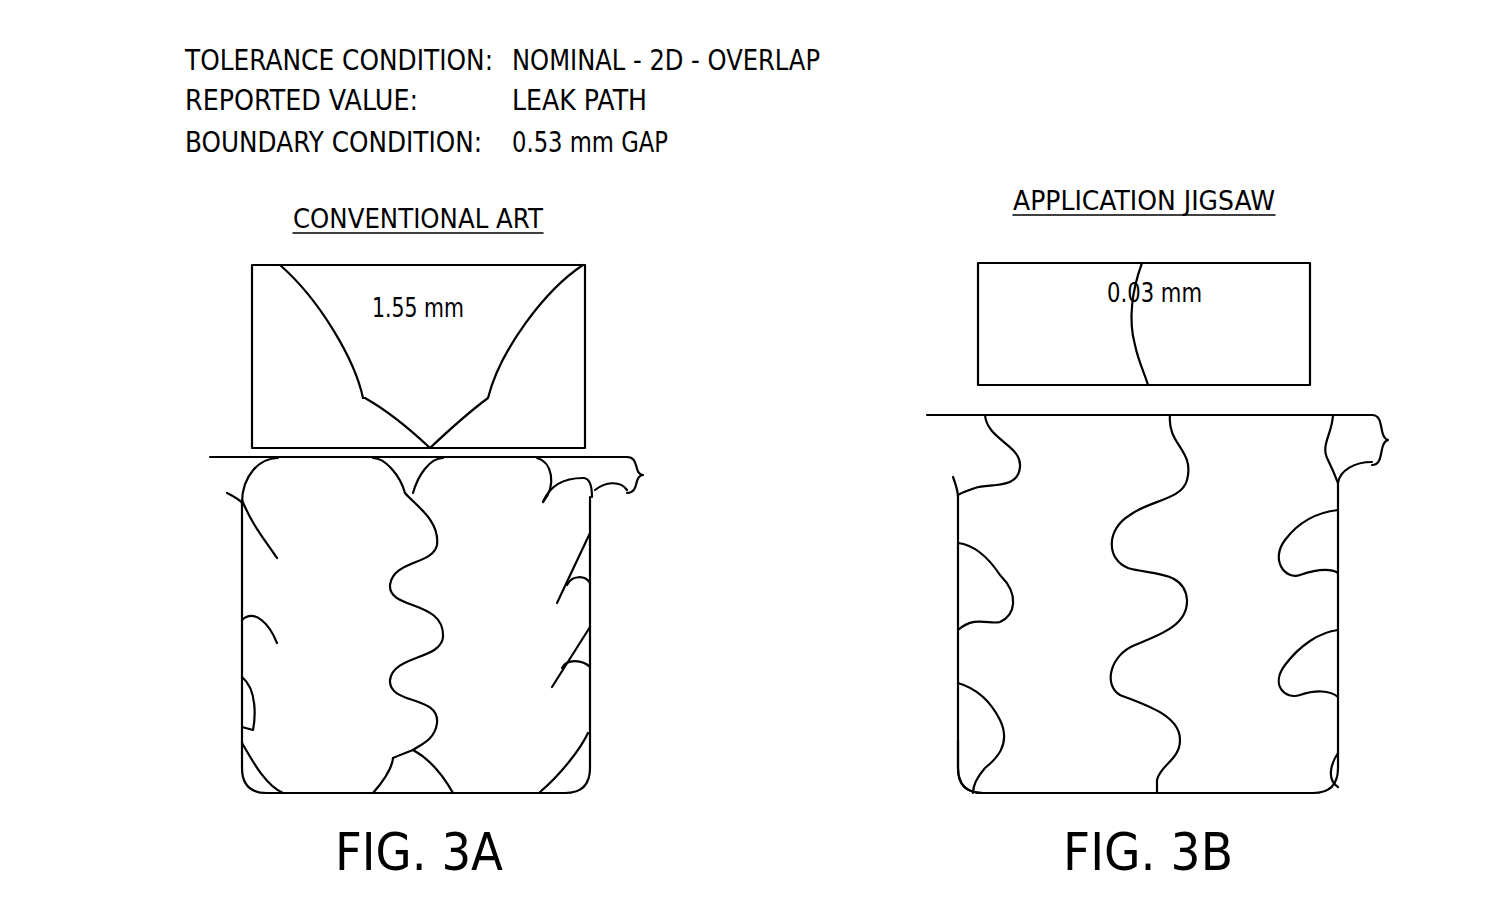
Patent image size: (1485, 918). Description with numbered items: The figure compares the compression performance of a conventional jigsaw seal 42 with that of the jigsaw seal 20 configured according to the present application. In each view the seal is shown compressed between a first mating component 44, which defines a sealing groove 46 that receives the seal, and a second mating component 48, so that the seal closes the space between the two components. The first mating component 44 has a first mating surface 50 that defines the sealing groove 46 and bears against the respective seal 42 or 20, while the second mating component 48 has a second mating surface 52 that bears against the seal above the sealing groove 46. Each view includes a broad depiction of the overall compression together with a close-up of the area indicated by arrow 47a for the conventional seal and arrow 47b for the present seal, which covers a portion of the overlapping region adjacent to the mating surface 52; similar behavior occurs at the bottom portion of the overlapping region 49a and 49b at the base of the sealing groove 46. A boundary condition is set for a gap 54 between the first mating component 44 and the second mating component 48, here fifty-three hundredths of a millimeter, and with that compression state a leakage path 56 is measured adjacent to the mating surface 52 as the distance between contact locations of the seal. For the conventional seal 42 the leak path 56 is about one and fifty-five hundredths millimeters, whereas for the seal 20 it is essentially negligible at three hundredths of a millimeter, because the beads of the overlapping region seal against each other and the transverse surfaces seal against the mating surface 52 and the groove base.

In FIG. 3B, the jigsaw seal 20 is at (924, 621).
In FIG. 3A, the conventional jigsaw seal 42 is at (628, 589).
In FIG. 3A, the first mating component 44 is at (227, 493).
In FIG. 3B, the first mating component 44 is at (953, 477).
In FIG. 3A, the sealing groove 46 is at (250, 773).
In FIG. 3B, the sealing groove 46 is at (972, 747).
In FIG. 3A, the close-up area arrow (conventional seal) 47a is at (605, 300).
In FIG. 3B, the close-up area arrow (present seal) 47b is at (1334, 299).
In FIG. 3A, the second mating component 48 is at (297, 265).
In FIG. 3B, the second mating component 48 is at (1022, 263).
In FIG. 3A, the bottom portion of overlapping region (conventional seal) 49a is at (362, 742).
In FIG. 3B, the bottom portion of overlapping region (present seal) 49b is at (1124, 767).
In FIG. 3A, the first mating surface 50 is at (227, 493).
In FIG. 3B, the first mating surface 50 is at (958, 497).
In FIG. 3A, the second mating surface 52 is at (527, 267).
In FIG. 3B, the second mating surface 52 is at (940, 415).
In FIG. 3A, the gap 54 is at (643, 475).
In FIG. 3B, the gap 54 is at (1388, 440).
In FIG. 3A, the leak path 56 is at (432, 378).
In FIG. 3B, the leak path 56 is at (1152, 273).